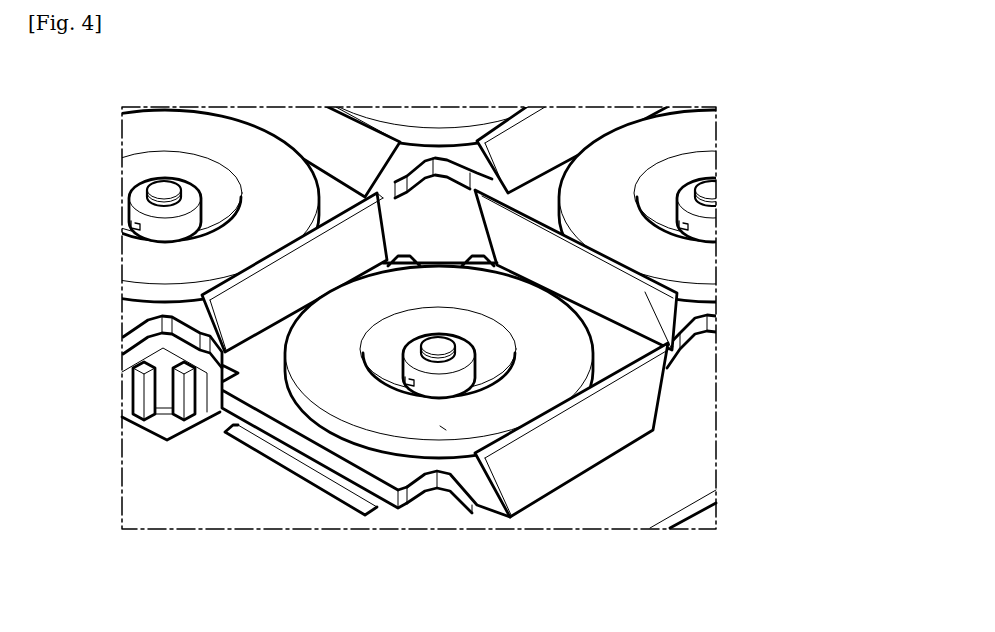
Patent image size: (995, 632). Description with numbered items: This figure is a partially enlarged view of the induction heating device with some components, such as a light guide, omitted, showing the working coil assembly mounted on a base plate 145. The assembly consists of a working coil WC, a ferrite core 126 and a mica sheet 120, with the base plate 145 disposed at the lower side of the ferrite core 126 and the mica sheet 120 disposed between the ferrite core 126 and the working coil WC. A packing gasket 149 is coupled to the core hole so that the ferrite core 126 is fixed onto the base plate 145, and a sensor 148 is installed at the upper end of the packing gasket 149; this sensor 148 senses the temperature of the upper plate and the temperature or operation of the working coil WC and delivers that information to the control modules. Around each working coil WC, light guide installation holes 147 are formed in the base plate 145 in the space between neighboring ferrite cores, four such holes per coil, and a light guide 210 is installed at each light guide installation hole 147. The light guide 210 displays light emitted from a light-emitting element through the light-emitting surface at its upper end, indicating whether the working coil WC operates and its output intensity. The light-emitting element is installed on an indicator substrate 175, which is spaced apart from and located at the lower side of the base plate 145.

The mica sheet 120 is at (261, 393).
The ferrite core 126 is at (418, 490).
The working coil WC is at (443, 428).
The base plate 145 is at (607, 500).
The light guide installation hole 147 is at (289, 461).
The sensor 148 is at (455, 340).
The packing gasket 149 is at (463, 366).
The indicator substrate 175 is at (210, 400).
The light guide 210 is at (532, 478).